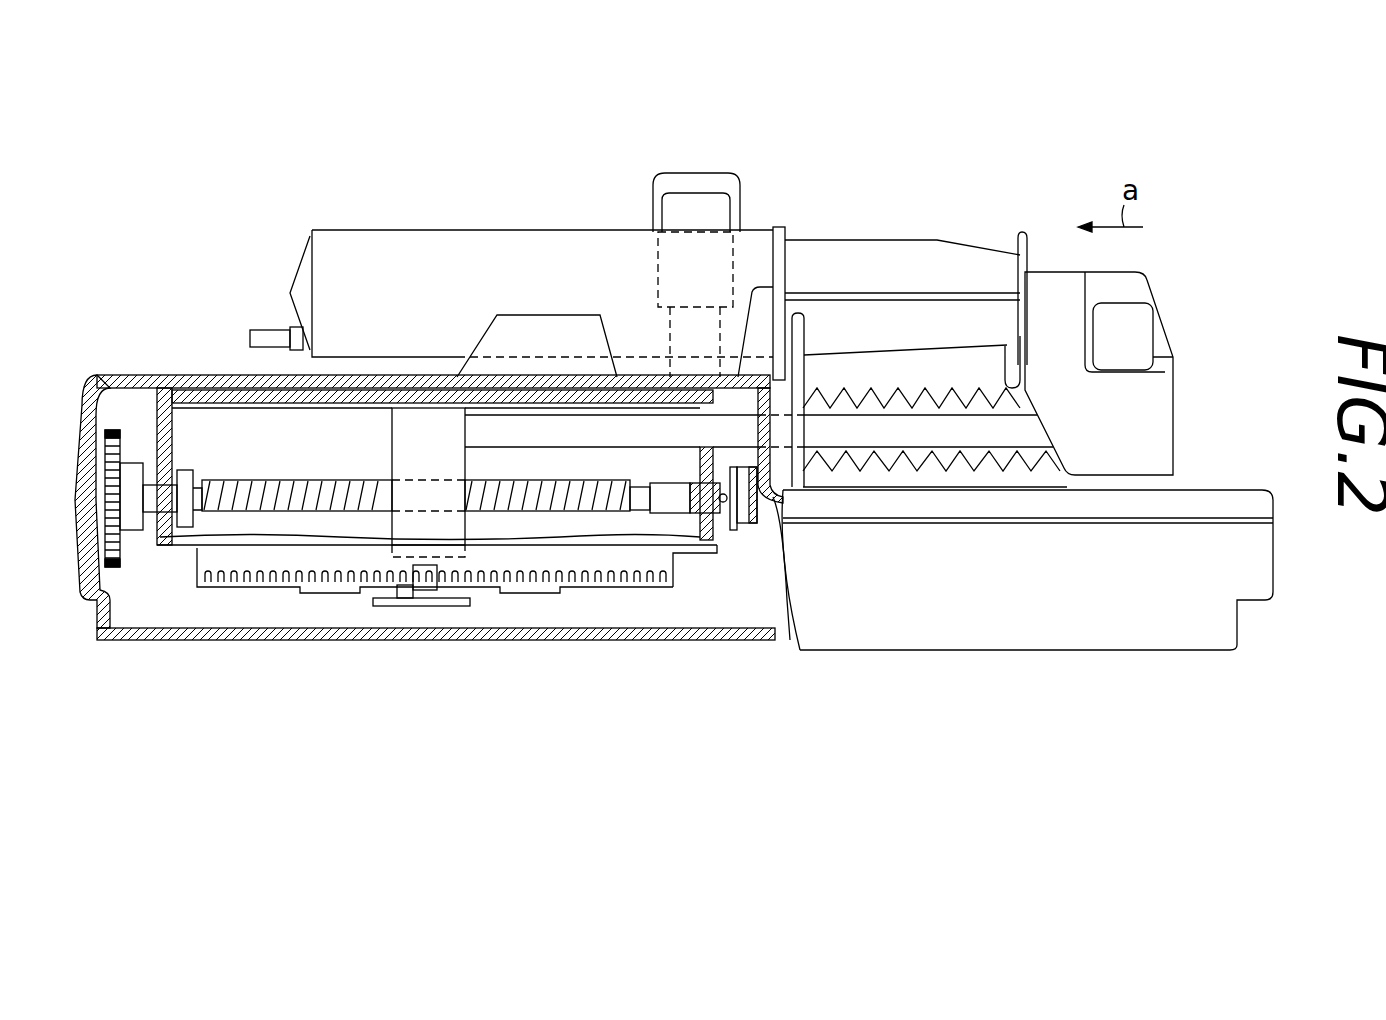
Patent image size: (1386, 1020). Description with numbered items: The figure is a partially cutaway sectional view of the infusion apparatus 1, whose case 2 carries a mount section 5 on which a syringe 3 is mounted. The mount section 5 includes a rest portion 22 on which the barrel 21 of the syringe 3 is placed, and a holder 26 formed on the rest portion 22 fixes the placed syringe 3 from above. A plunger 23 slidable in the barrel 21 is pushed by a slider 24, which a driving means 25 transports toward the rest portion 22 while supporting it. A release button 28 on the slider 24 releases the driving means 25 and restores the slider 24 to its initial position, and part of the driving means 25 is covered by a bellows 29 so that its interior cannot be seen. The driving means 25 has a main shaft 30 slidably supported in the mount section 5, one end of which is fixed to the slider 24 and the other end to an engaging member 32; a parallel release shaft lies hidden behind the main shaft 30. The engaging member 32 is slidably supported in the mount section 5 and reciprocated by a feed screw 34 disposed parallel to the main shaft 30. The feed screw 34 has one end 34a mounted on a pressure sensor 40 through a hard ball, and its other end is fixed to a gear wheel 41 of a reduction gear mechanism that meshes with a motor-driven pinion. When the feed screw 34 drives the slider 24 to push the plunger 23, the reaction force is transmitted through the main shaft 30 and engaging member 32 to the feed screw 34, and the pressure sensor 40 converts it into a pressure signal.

The infusion apparatus 1 is at (145, 350).
The case 2 is at (1203, 500).
The syringe 3 is at (420, 228).
The mount section 5 is at (258, 355).
The barrel 21 is at (573, 245).
The rest portion 22 is at (542, 330).
The plunger 23 is at (895, 257).
The slider 24 is at (1160, 418).
The driving means 25 is at (200, 440).
The holder 26 is at (695, 185).
The release button 28 is at (1140, 330).
The bellows 29 is at (968, 470).
The main shaft 30 is at (888, 430).
The engaging member 32 is at (395, 445).
The feed screw 34 is at (305, 488).
The one end of feed screw 34a is at (692, 488).
The pressure sensor 40 is at (745, 533).
The gear wheel 41 is at (108, 430).